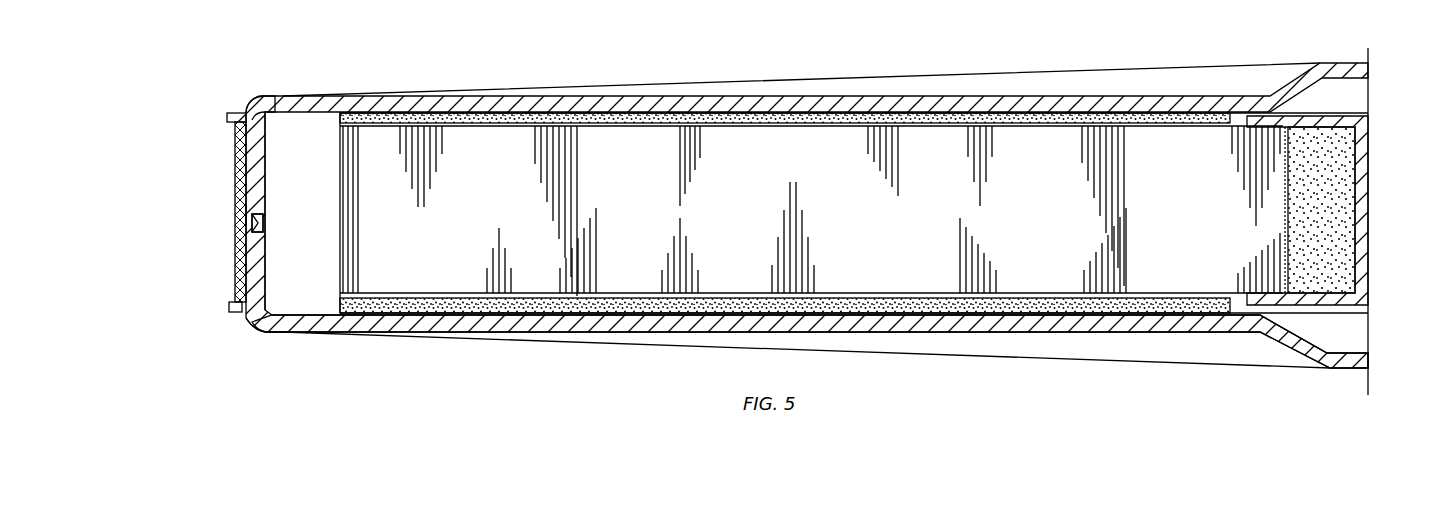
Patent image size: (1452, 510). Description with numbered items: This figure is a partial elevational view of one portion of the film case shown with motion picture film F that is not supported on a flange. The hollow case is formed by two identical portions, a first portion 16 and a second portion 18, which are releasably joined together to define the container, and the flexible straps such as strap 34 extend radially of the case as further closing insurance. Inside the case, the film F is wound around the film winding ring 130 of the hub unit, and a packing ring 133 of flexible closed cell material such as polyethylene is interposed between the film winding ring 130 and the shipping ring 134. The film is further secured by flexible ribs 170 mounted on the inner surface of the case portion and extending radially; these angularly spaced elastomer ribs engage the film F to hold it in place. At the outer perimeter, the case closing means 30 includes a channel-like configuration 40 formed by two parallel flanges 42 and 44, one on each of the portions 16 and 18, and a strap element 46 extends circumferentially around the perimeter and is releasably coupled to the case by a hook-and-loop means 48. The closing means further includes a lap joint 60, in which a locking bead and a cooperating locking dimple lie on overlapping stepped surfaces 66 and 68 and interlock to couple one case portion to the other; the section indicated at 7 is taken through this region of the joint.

The first portion 16 is at (297, 96).
The second portion 18 is at (317, 331).
The strap 34 is at (985, 68).
The film winding ring 130 is at (1283, 262).
The flexible ribs 170 is at (495, 113).
The motion picture film F is at (778, 113).
The packing ring 133 is at (1370, 142).
The shipping ring 134 is at (1346, 268).
The flange 42 is at (230, 117).
The flange 44 is at (237, 313).
The strap element 46 is at (238, 175).
The channel-like configuration 40 is at (246, 103).
The hook-and-loop means 48 is at (264, 188).
The stepped surface 68 is at (240, 212).
The stepped surface 66 is at (272, 222).
The lap joint 60 is at (278, 231).
The section line 7 is at (222, 205).
The case closing means 30 is at (210, 330).